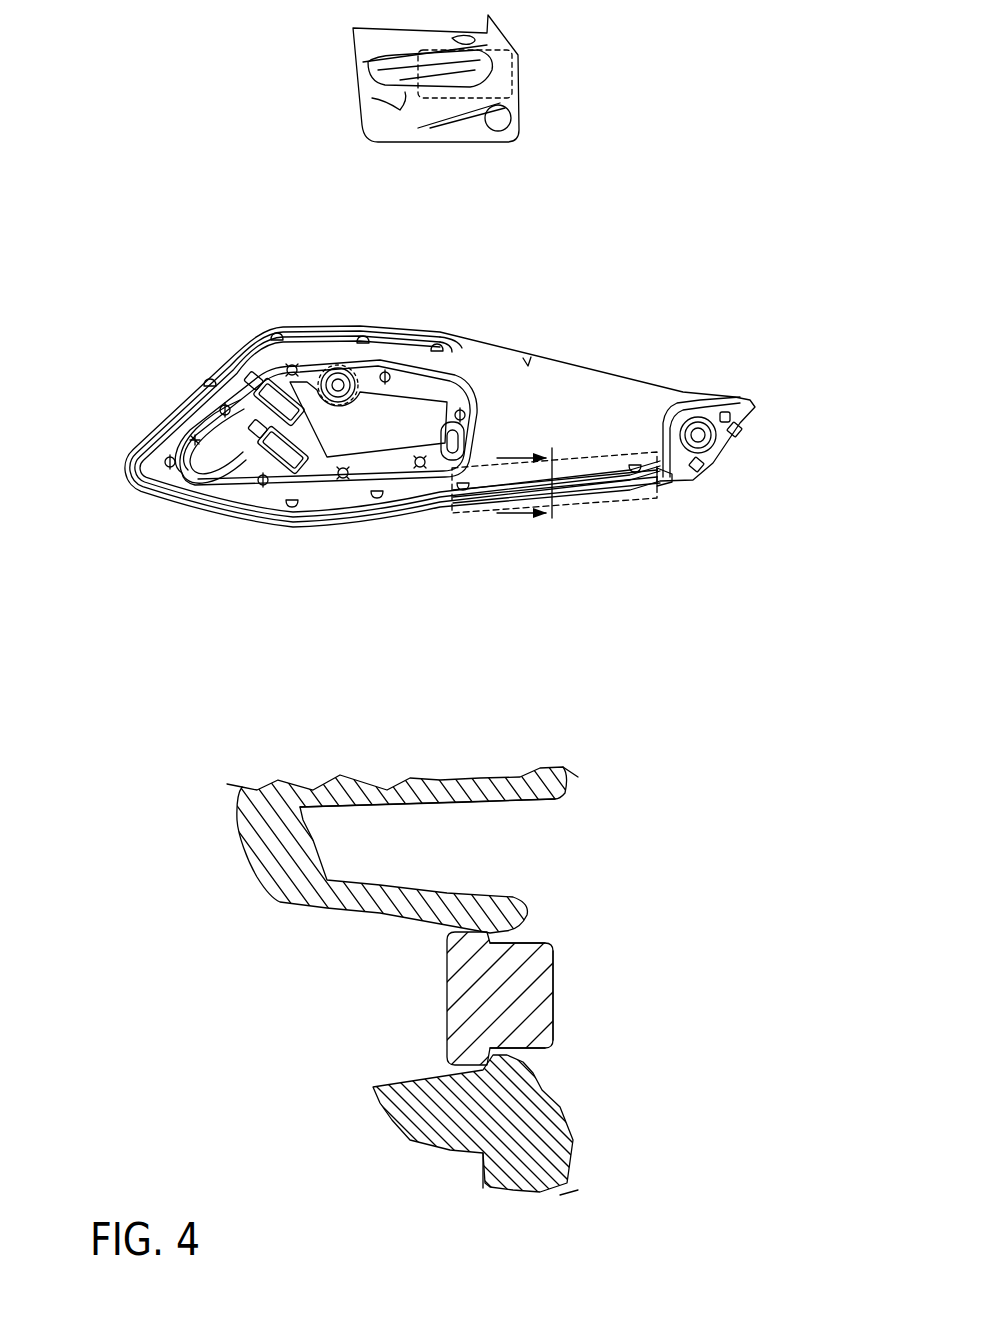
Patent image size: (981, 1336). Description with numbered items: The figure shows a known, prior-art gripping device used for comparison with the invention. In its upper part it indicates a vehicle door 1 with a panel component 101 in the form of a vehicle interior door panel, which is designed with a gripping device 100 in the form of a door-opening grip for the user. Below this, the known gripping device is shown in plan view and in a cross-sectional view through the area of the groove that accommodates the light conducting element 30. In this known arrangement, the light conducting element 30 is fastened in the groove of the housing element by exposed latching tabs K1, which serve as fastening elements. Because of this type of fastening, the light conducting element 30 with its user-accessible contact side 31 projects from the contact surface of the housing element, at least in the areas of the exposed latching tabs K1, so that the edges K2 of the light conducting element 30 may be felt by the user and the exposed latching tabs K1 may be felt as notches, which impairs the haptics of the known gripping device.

The vehicle door 1 is at (547, 139).
The gripping device 100 is at (475, 77).
The panel component 101 is at (375, 43).
The light conducting element 30 is at (425, 497).
The contact side 31 is at (556, 994).
The exposed latching tabs K1 is at (229, 358).
The edges K2 is at (541, 923).